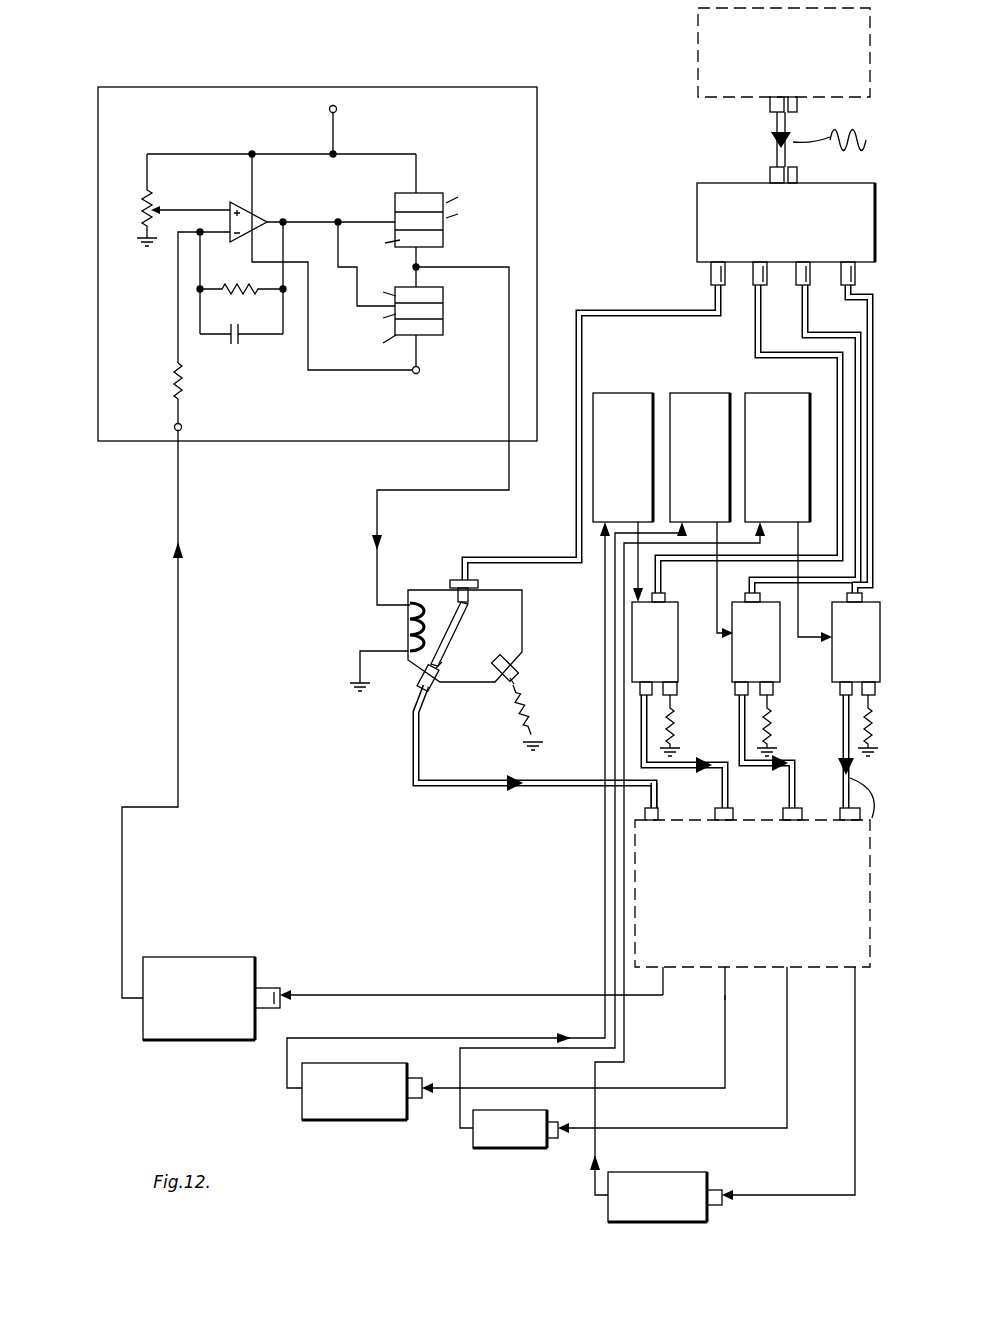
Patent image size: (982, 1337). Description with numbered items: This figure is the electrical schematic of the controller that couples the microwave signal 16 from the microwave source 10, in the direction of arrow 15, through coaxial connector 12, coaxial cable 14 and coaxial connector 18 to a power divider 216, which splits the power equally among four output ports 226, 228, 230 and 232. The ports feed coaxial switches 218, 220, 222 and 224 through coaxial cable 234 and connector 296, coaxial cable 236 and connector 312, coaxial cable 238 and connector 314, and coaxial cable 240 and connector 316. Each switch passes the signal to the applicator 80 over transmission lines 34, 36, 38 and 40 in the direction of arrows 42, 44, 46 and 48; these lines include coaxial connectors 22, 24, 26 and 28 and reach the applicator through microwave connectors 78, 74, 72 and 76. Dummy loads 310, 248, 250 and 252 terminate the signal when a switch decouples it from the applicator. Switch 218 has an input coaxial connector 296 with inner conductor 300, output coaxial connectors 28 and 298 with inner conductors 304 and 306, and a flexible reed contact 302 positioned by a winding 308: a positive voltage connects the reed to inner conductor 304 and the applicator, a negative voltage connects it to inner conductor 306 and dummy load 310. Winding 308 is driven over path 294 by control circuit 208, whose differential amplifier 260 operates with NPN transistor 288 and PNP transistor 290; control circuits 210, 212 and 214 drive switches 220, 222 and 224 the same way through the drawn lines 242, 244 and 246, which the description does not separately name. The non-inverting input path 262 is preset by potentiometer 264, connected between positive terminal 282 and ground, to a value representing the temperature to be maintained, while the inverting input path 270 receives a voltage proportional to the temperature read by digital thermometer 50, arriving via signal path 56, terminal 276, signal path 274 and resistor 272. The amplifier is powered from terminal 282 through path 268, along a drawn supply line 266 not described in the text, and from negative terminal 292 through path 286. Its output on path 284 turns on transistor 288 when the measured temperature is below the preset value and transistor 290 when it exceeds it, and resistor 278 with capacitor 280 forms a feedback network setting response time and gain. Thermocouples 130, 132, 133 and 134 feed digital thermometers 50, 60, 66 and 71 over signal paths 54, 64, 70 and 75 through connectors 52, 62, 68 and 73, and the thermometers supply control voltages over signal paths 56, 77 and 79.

The microwave source 10 is at (698, 48).
The coaxial connector 12 is at (769, 108).
The coaxial cable 14 is at (789, 122).
The arrow 15 is at (772, 143).
The microwave signal 16 is at (834, 153).
The coaxial connector 18 is at (798, 176).
The power divider 216 is at (696, 210).
The output port 226 is at (710, 272).
The output port 228 is at (755, 292).
The output port 230 is at (798, 288).
The output port 232 is at (845, 287).
The coaxial cable 234 is at (615, 309).
The coaxial cable 236 is at (749, 439).
The coaxial cable 238 is at (822, 336).
The coaxial cable 240 is at (866, 319).
The control circuit 210 is at (634, 390).
The control circuit 212 is at (716, 390).
The control circuit 214 is at (792, 390).
The control line 242 is at (636, 523).
The control line 244 is at (717, 636).
The control line 246 is at (810, 640).
The connector 312 is at (665, 594).
The connector 314 is at (760, 597).
The connector 316 is at (847, 596).
The coaxial switch 220 is at (641, 656).
The coaxial switch 222 is at (742, 656).
The coaxial switch 224 is at (842, 656).
The dummy load 248 is at (678, 726).
The dummy load 250 is at (775, 726).
The dummy load 252 is at (862, 724).
The coaxial connector 26 is at (640, 692).
The coaxial connector 24 is at (734, 690).
The coaxial connector 22 is at (839, 690).
The coaxial cable 38 is at (722, 766).
The coaxial cable 36 is at (795, 763).
The arrow 42 is at (843, 772).
The arrow 46 is at (651, 796).
The arrow 44 is at (775, 770).
The coaxial cable 40 is at (580, 790).
The arrow 48 is at (515, 793).
The microwave connector 76 is at (660, 813).
The microwave connector 72 is at (735, 813).
The microwave connector 74 is at (802, 812).
The microwave connector 78 is at (858, 821).
The coaxial cable 34 is at (870, 830).
The applicator 80 is at (752, 893).
The thermocouple 130 is at (665, 967).
The thermocouple 132 is at (725, 970).
The thermocouple 133 is at (782, 970).
The thermocouple 134 is at (845, 970).
The control circuit 208 is at (485, 87).
The terminal 282 is at (337, 109).
The supply line 266 is at (291, 153).
The path 268 is at (250, 173).
The potentiometer 264 is at (138, 200).
The signal path 262 is at (190, 208).
The differential amplifier 260 is at (258, 215).
The output path 284 is at (363, 220).
The transistor 288 is at (442, 193).
The path 294 is at (475, 266).
The signal path 270 is at (177, 305).
The resistor 278 is at (234, 286).
The path 286 is at (330, 310).
The transistor 290 is at (446, 325).
The capacitor 280 is at (242, 340).
The resistor 272 is at (184, 376).
The signal path 274 is at (175, 411).
The terminal 276 is at (182, 426).
The terminal 292 is at (416, 374).
The signal path 56 is at (123, 903).
The digital thermometer 50 is at (199, 957).
The connector 52 is at (268, 987).
The signal path 54 is at (334, 994).
The digital thermometer 60 is at (330, 1062).
The connector 62 is at (415, 1100).
The signal path 64 is at (450, 1092).
The digital thermometer 66 is at (505, 1150).
The connector 68 is at (554, 1140).
The signal path 70 is at (580, 1128).
The digital thermometer 71 is at (661, 1172).
The connector 73 is at (716, 1189).
The signal path 75 is at (787, 1194).
The signal path 77 is at (379, 1038).
The signal path 79 is at (496, 1048).
The coaxial switch 218 is at (523, 594).
The winding 308 is at (409, 634).
The input coaxial connector 296 is at (479, 582).
The inner conductor 300 is at (452, 597).
The flexible reed contact 302 is at (454, 636).
The coaxial connector 28 is at (420, 684).
The inner conductor 304 is at (440, 673).
The inner conductor 306 is at (512, 660).
The output coaxial connector 298 is at (518, 674).
The dummy load 310 is at (530, 708).